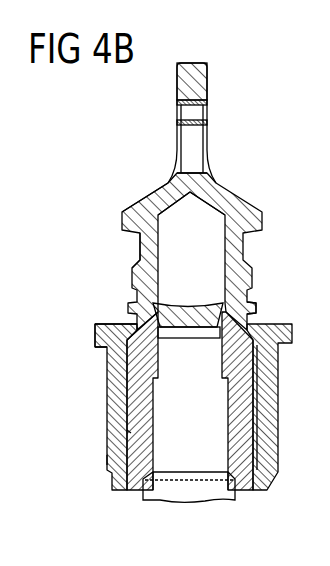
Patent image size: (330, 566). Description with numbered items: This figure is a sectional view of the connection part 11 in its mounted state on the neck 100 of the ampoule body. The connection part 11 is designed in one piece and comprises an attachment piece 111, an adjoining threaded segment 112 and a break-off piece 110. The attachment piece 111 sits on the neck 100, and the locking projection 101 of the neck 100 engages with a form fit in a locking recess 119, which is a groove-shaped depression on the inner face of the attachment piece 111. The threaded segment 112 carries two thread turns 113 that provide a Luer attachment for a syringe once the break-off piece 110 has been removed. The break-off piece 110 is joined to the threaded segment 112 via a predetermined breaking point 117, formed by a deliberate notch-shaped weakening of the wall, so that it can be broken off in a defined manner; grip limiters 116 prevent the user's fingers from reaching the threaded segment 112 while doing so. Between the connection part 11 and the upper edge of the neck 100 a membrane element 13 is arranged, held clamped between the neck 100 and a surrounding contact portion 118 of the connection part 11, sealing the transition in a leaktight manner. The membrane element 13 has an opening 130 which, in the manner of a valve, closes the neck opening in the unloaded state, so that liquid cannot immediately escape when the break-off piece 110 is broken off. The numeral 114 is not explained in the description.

The connection part 11 is at (94, 356).
The membrane element 13 is at (120, 374).
The neck 100 is at (130, 498).
The locking projection 101 is at (124, 432).
The break-off piece 110 is at (160, 193).
The attachment piece 111 is at (110, 458).
The threaded segment 112 is at (135, 289).
The thread turns 113 is at (252, 288).
The terminal stud 114 is at (177, 135).
The grip limiters 116 is at (135, 205).
The predetermined breaking point 117 is at (142, 261).
The contact portion 118 is at (100, 333).
The locking recess 119 is at (273, 460).
The opening 130 is at (197, 312).